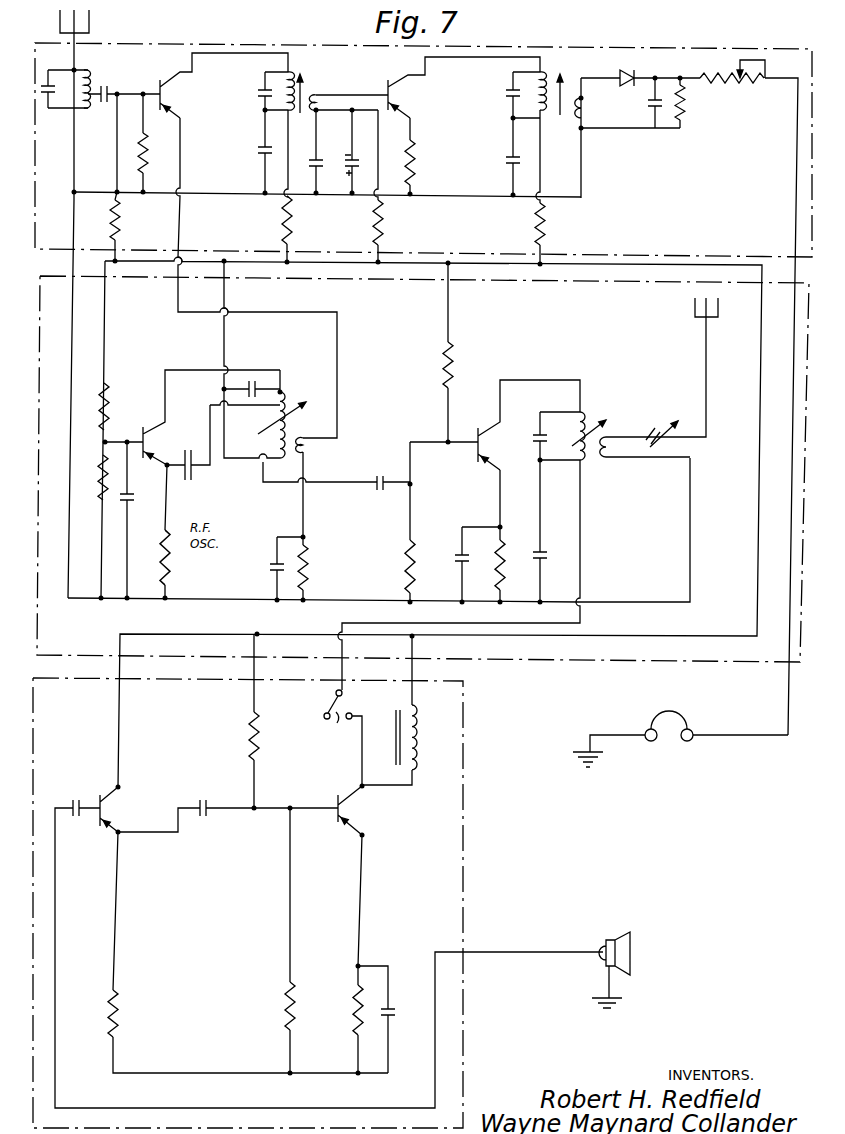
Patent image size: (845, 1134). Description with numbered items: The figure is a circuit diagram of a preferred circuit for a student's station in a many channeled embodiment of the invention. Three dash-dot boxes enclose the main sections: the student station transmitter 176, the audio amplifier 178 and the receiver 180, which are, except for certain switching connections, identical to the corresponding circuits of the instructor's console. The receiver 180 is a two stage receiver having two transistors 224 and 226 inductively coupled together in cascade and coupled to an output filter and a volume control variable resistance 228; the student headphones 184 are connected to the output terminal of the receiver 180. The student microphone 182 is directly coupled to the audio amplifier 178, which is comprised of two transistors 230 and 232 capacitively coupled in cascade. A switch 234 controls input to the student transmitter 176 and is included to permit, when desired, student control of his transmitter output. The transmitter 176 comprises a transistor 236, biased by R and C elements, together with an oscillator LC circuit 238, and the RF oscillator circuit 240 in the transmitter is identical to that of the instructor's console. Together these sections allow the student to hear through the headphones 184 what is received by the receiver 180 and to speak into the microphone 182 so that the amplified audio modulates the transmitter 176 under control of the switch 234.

The transmitter 176 is at (595, 349).
The audio amplifier 178 is at (220, 971).
The receiver 180 is at (690, 221).
The student microphone 182 is at (615, 942).
The student headphones 184 is at (668, 741).
The transistor 224 is at (181, 93).
The transistor 226 is at (386, 88).
The volume control variable resistance 228 is at (735, 81).
The transistor 230 is at (108, 814).
The transistor 232 is at (350, 812).
The switch 234 is at (338, 721).
The transistor 236 is at (480, 431).
The oscillator LC circuit 238 is at (590, 420).
The RF oscillator circuit 240 is at (183, 370).